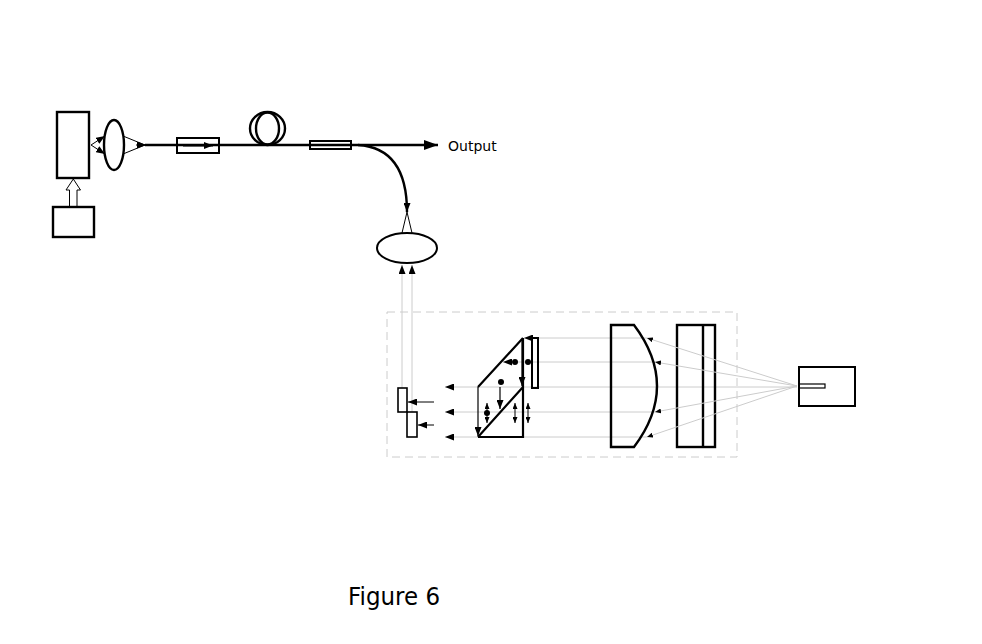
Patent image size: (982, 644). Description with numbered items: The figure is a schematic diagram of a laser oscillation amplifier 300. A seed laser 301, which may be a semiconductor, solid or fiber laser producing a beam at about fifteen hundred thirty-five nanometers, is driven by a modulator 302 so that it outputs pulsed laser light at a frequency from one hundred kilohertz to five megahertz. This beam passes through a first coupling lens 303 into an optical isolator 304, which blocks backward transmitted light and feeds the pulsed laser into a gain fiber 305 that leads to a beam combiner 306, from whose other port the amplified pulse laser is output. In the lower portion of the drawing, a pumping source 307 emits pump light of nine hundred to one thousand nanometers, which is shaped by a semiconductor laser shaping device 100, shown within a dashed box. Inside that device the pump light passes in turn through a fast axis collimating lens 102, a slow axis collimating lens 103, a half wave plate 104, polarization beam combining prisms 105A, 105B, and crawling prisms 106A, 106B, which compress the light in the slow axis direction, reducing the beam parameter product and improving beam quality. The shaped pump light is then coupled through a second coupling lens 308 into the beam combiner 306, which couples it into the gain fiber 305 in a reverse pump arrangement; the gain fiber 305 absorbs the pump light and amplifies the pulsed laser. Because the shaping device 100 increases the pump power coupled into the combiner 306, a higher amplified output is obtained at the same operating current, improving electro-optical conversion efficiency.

The semiconductor laser shaping device 100 is at (733, 451).
The fast axis collimating lens 102 is at (695, 332).
The slow axis collimating lens 103 is at (623, 332).
The half wave plate 104 is at (533, 335).
The polarization beam combining prism 105A is at (512, 422).
The polarization beam combining prism 105B is at (492, 380).
The crawling prism 106A is at (412, 435).
The crawling prism 106B is at (400, 403).
The laser oscillation amplifier 300 is at (708, 98).
The seed laser 301 is at (65, 118).
The modulator 302 is at (85, 225).
The first coupling lens 303 is at (116, 132).
The optical isolator 304 is at (198, 140).
The gain fiber 305 is at (270, 113).
The beam combiner 306 is at (343, 143).
The pumping source 307 is at (818, 372).
The second coupling lens 308 is at (423, 245).